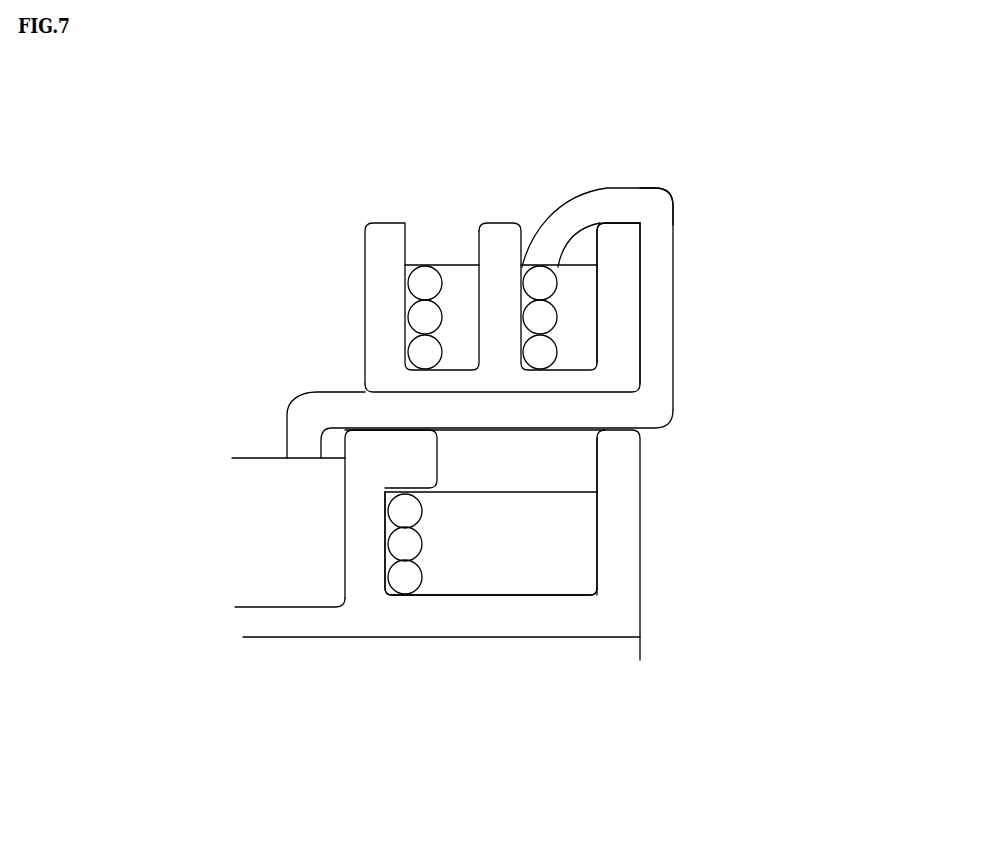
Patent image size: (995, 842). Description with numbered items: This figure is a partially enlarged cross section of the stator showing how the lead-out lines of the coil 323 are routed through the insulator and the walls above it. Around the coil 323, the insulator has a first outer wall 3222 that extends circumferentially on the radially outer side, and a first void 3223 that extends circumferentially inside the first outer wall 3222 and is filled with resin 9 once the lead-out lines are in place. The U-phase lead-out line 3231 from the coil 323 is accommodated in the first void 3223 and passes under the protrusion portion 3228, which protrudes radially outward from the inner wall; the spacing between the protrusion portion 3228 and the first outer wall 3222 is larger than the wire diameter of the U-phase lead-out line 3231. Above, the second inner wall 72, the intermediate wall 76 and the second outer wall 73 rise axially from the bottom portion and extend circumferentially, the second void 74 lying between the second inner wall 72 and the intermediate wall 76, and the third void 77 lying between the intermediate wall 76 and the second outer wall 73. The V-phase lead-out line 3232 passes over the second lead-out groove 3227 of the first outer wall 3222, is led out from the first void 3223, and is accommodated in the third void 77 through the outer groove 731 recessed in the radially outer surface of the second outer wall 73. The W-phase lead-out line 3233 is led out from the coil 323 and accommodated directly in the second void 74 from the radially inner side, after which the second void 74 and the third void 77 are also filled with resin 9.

The second inner wall 72 is at (383, 260).
The resin 9 is at (467, 282).
The second void 74 is at (447, 247).
The intermediate wall 76 is at (503, 245).
The outer groove 731 is at (668, 190).
The V-phase lead-out line 3232 is at (655, 217).
The third void 77 is at (582, 257).
The second outer wall 73 is at (617, 312).
The W-phase lead-out line 3233 is at (427, 318).
The second lead-out groove 3227 is at (682, 403).
The first outer wall 3222 is at (617, 522).
The protrusion portion 3228 is at (385, 470).
The coil 323 is at (278, 561).
The U-phase lead-out line 3231 is at (402, 583).
The first void 3223 is at (510, 562).